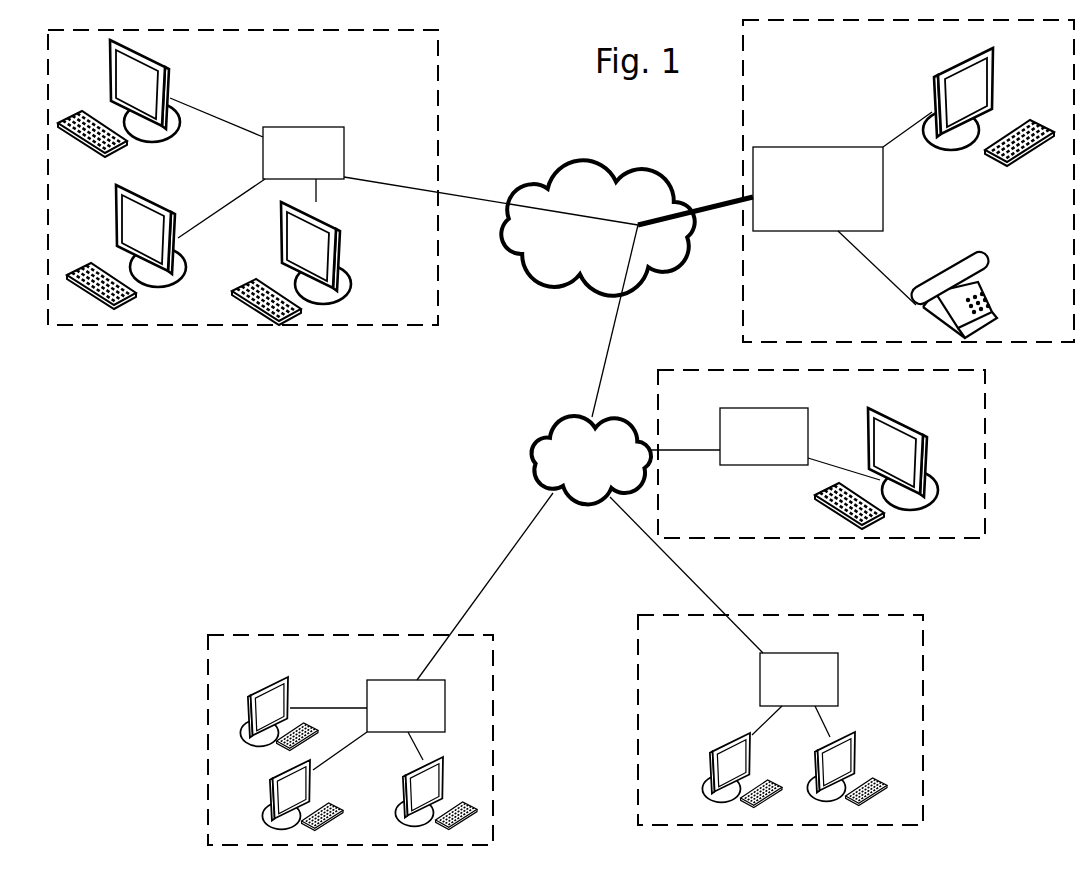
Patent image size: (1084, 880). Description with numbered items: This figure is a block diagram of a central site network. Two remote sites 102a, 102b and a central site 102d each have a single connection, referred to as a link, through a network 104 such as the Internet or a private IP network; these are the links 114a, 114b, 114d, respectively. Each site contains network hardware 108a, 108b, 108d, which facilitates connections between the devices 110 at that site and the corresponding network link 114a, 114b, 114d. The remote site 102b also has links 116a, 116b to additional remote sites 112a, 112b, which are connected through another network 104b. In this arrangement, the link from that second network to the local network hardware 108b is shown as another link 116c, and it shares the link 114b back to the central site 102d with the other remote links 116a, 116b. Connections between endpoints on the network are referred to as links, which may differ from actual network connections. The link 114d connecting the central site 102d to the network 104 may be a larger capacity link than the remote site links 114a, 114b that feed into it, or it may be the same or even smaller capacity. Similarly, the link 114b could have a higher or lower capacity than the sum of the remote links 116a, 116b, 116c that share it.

The remote site 102a is at (243, 177).
The remote site 102b is at (821, 454).
The central site 102d is at (908, 181).
The network 104 is at (597, 228).
The another network 104b is at (592, 460).
The network hardware 108a is at (504, 434).
The network hardware 108b is at (800, 444).
The network hardware 108d is at (842, 208).
The devices 110 is at (556, 435).
The additional remote site 112a is at (350, 740).
The additional remote site 112b is at (780, 720).
The link 114a is at (491, 192).
The link 114b is at (626, 321).
The link 114d is at (695, 197).
The link 116a is at (485, 586).
The link 116b is at (686, 575).
The link 116c is at (685, 437).